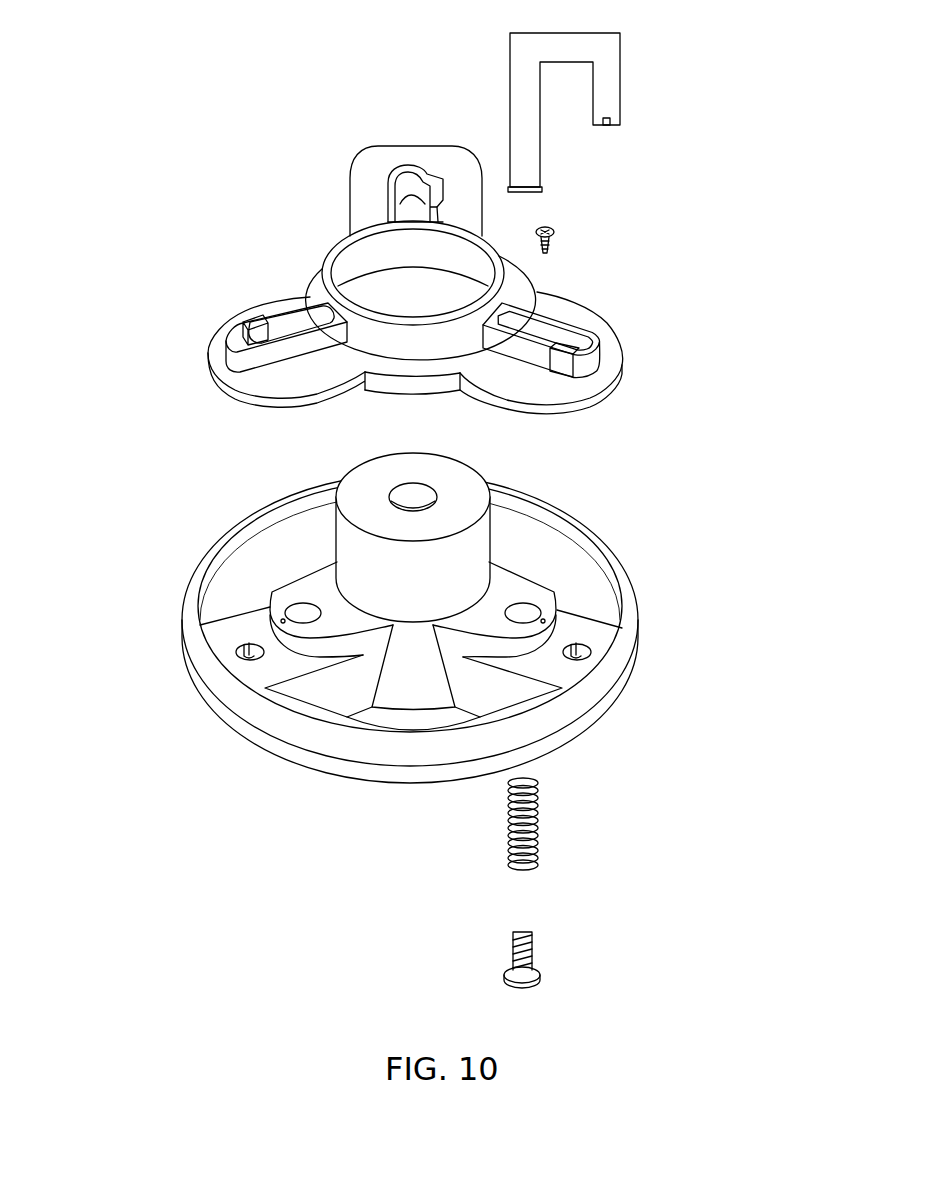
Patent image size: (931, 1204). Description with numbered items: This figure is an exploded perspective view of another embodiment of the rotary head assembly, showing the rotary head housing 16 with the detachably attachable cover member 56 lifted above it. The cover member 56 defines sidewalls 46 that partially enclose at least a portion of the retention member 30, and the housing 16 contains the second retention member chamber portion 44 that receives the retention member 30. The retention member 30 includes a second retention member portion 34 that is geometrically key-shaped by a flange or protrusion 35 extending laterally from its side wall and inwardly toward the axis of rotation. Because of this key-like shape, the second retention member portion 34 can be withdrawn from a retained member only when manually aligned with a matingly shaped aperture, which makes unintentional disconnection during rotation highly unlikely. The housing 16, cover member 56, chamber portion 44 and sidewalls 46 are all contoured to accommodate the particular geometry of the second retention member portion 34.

The rotary head housing 16 is at (386, 619).
The retention member 30 is at (475, 45).
The second retention member portion 34 is at (610, 80).
The flange or protrusion 35 is at (607, 125).
The second retention member chamber portion 44 is at (248, 650).
The sidewalls 46 is at (268, 317).
The cover member 56 is at (425, 305).